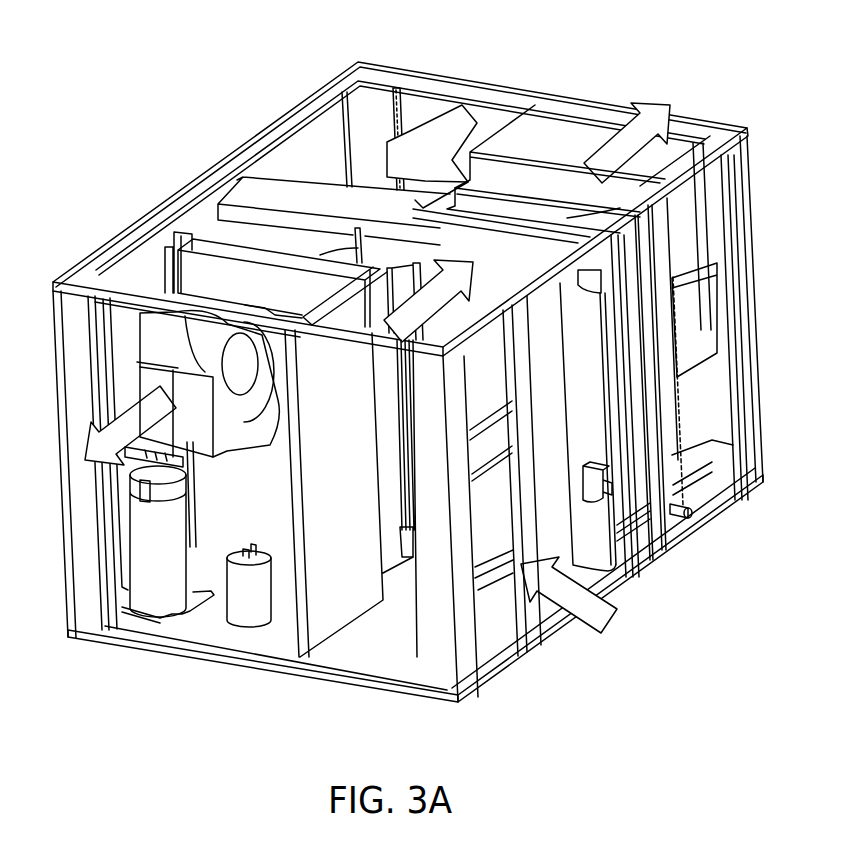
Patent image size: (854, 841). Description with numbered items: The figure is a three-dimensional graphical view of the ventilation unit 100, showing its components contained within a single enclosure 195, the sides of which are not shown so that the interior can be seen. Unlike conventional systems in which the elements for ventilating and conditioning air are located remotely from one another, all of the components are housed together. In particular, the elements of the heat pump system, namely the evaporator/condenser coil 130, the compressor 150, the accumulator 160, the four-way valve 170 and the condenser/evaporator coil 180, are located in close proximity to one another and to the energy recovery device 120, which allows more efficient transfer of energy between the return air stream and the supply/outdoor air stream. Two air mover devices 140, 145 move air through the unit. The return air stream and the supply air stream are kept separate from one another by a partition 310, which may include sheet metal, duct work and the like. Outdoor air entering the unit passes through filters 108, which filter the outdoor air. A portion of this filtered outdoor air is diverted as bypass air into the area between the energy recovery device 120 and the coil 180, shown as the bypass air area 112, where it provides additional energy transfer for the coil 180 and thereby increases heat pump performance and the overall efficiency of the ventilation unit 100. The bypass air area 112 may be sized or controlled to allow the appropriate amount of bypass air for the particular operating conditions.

The ventilation unit 100 is at (157, 71).
The filters 108 is at (509, 555).
The bypass air area 112 is at (353, 253).
The energy recovery device 120 is at (315, 238).
The evaporator/condenser coil 130 is at (680, 186).
The air mover device 140 is at (704, 328).
The air mover device 145 is at (167, 338).
The compressor 150 is at (148, 590).
The accumulator 160 is at (243, 620).
The four-way valve 170 is at (190, 476).
The condenser/evaporator coil 180 is at (230, 284).
The enclosure 195 is at (85, 594).
The partition 310 is at (527, 127).